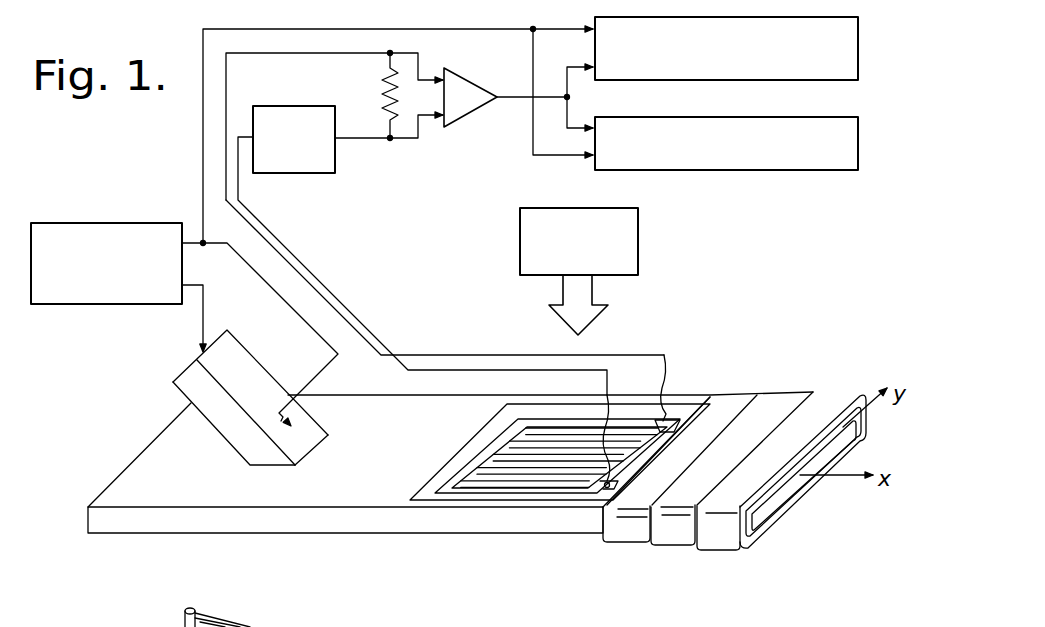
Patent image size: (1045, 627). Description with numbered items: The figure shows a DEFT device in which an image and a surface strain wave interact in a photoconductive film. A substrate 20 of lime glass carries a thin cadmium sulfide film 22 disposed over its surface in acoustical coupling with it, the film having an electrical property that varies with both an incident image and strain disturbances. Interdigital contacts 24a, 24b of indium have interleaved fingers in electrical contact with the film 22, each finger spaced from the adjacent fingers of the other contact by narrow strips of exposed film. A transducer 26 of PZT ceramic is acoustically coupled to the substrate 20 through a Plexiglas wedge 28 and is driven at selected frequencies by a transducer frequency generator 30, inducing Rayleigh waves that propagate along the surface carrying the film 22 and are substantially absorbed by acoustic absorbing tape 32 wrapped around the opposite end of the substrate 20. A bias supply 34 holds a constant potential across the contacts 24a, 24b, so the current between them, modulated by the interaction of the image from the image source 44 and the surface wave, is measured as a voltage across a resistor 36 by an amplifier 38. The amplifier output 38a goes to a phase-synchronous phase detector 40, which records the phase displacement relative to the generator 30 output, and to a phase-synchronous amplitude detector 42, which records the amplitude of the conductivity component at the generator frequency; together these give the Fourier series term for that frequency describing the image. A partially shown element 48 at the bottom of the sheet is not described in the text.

The substrate 20 is at (328, 522).
The film 22 is at (690, 402).
The interdigital contact 24a is at (613, 485).
The interdigital contact 24b is at (680, 430).
The transducer 26 is at (188, 385).
The wedge 28 is at (266, 457).
The transducer frequency generator 30 is at (84, 296).
The acoustic absorbing tape 32 is at (718, 542).
The bias supply 34 is at (277, 163).
The resistor 36 is at (382, 97).
The amplifier 38 is at (462, 75).
The output 38a is at (548, 95).
The phase-synchronous phase detector 40 is at (842, 23).
The phase-synchronous amplitude detector 42 is at (855, 164).
The image source 44 is at (639, 252).
The lens element 48 is at (278, 615).